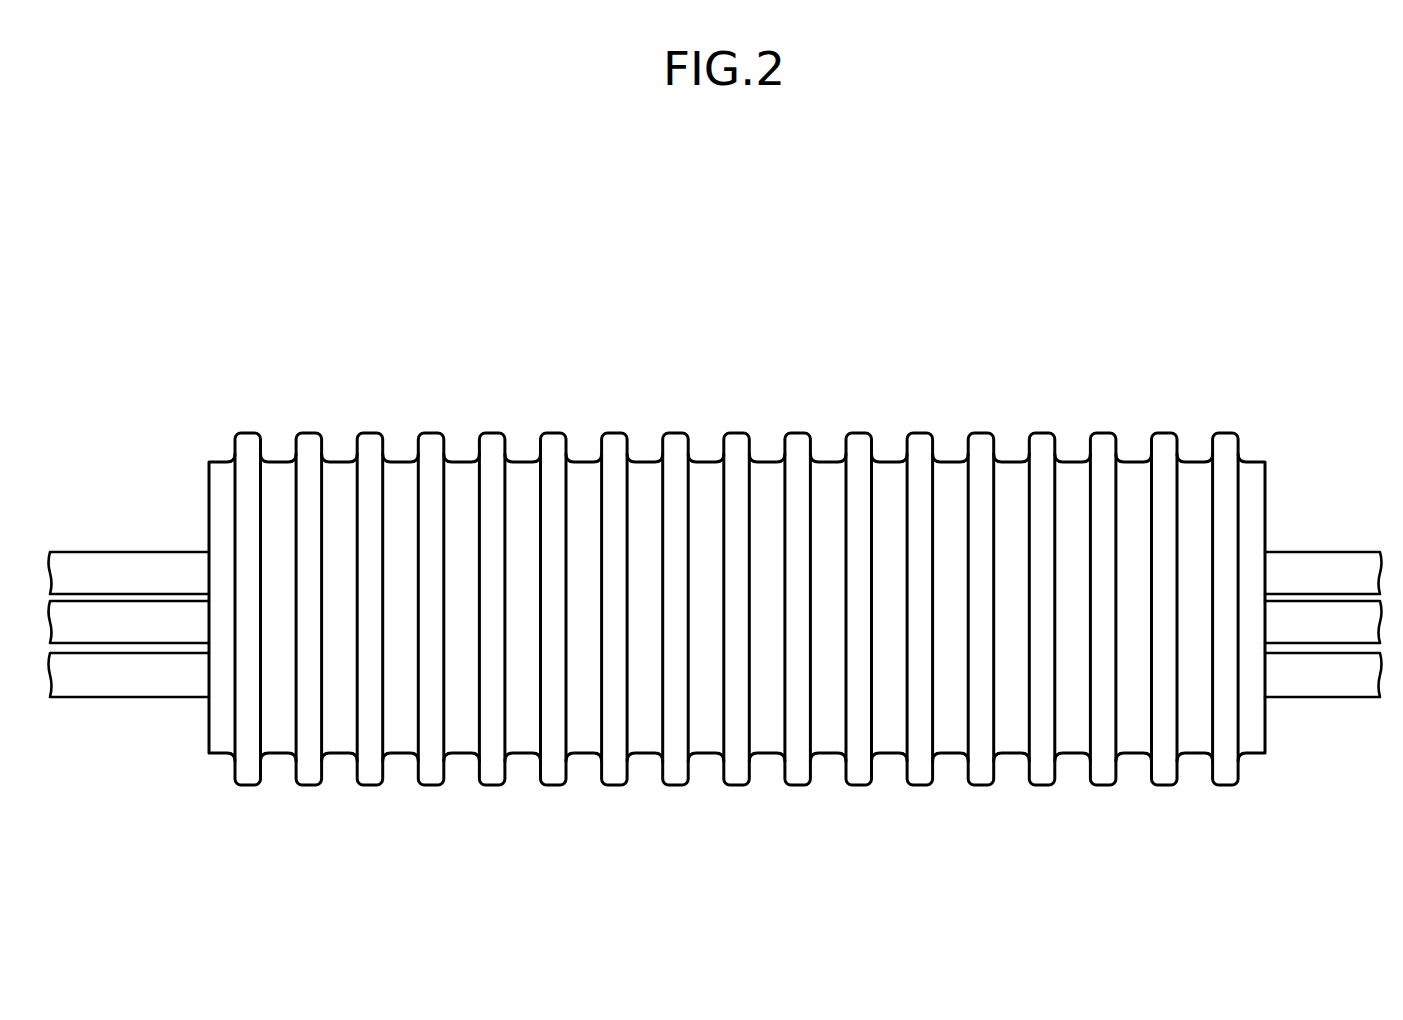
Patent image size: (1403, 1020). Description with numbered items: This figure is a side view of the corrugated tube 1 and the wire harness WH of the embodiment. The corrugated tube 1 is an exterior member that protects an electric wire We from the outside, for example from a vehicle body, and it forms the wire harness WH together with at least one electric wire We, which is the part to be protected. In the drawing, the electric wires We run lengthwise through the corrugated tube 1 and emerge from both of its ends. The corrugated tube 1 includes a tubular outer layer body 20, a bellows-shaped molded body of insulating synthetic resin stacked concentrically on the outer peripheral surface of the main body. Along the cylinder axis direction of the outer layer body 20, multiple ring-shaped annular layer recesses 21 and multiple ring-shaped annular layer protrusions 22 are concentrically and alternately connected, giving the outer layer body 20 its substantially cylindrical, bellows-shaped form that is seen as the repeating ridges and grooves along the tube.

The corrugated tube 1 is at (553, 287).
The outer layer body 20 is at (217, 460).
The annular layer recess 21 is at (278, 753).
The annular layer protrusion 22 is at (247, 433).
The wire harness WH is at (913, 208).
The electric wire We is at (1315, 667).